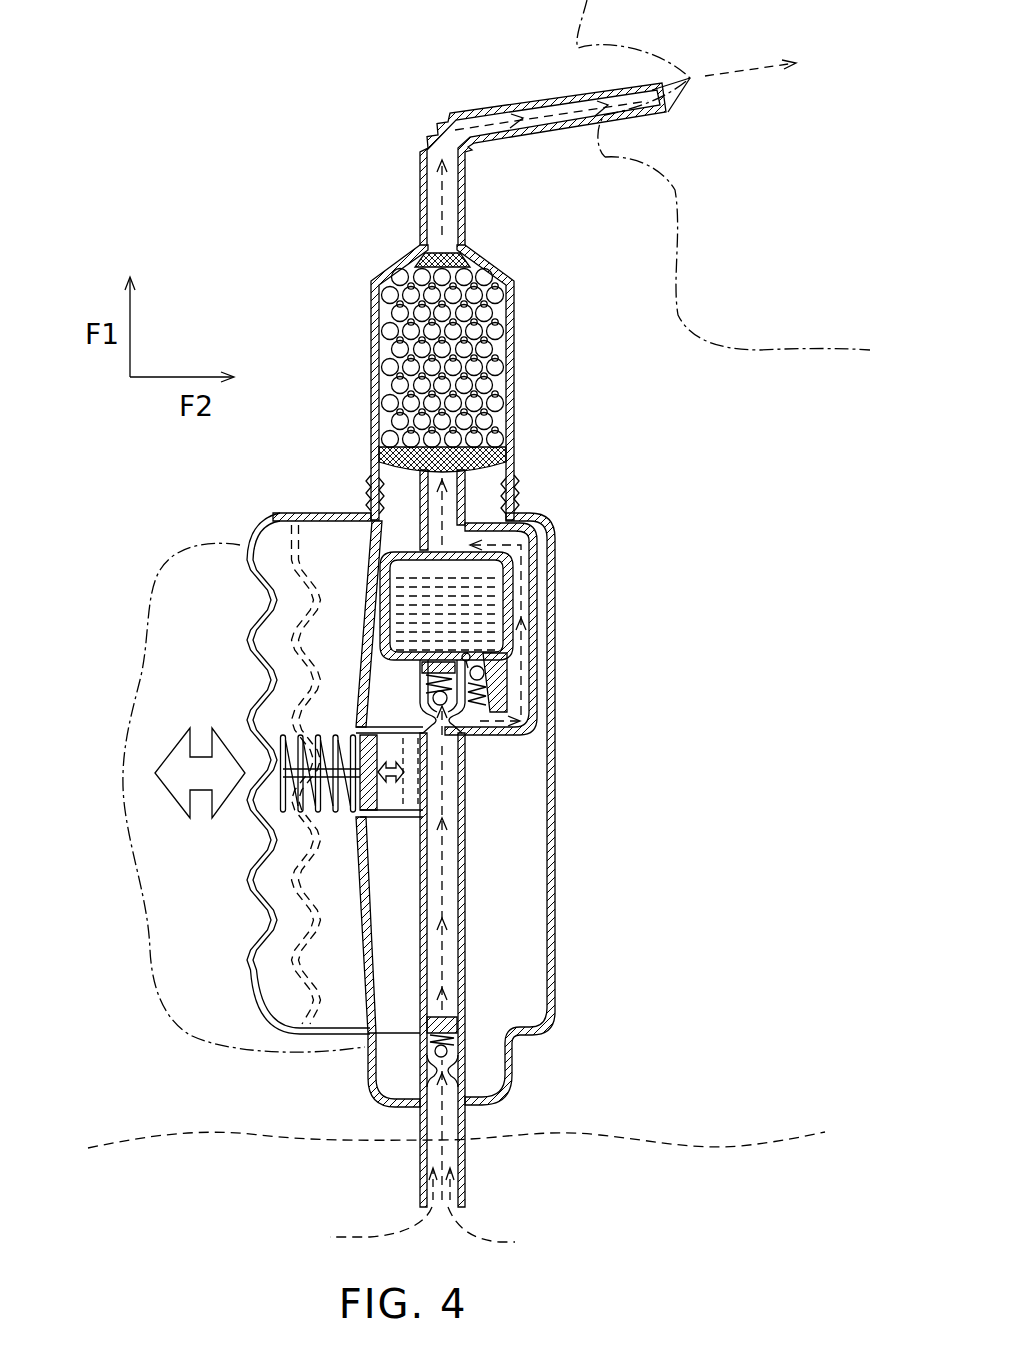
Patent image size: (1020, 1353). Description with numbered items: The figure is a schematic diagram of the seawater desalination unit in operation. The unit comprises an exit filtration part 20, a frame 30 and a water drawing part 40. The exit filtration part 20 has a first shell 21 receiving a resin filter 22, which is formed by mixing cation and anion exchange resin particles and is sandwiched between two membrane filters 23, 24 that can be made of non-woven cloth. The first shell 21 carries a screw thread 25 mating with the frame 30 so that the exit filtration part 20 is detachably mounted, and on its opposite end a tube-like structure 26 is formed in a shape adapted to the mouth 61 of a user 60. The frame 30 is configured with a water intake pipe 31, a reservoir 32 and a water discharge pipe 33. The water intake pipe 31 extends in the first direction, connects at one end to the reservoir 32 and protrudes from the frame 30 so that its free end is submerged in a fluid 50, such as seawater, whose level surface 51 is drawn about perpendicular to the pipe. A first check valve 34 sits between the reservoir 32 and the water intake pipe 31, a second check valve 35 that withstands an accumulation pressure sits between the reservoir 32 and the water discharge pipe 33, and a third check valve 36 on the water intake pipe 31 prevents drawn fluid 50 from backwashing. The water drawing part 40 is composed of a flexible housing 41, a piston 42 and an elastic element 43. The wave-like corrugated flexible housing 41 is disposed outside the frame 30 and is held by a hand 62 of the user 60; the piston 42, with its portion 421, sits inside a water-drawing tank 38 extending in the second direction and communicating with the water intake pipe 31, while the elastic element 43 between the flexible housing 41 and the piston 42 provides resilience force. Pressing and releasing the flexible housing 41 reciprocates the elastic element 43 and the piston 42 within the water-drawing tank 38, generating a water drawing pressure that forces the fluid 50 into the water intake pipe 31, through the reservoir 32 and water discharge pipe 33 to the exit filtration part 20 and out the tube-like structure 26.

The exit filtration part 20 is at (347, 374).
The first shell 21 is at (514, 340).
The resin filter 22 is at (485, 405).
The membrane filter 23 is at (512, 450).
The membrane filter 24 is at (412, 267).
The screw thread 25 is at (378, 472).
The tube-like structure 26 is at (537, 134).
The frame 30 is at (578, 823).
The water intake pipe 31 is at (448, 913).
The reservoir 32 is at (402, 572).
The water discharge pipe 33 is at (525, 608).
The first check valve 34 is at (427, 684).
The second check valve 35 is at (482, 672).
The third check valve 36 is at (422, 1032).
The water-drawing tank 38 is at (374, 498).
The water drawing part 40 is at (300, 510).
The flexible housing 41 is at (285, 513).
The piston 42 is at (393, 740).
The piston rod 421 is at (392, 800).
The elastic element 43 is at (324, 736).
The fluid 50 is at (673, 1165).
The liquid surface 51 is at (227, 1130).
The user 60 is at (729, 380).
The mouth 61 is at (658, 137).
The hand 62 is at (128, 770).